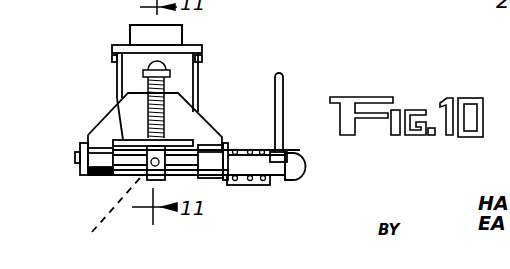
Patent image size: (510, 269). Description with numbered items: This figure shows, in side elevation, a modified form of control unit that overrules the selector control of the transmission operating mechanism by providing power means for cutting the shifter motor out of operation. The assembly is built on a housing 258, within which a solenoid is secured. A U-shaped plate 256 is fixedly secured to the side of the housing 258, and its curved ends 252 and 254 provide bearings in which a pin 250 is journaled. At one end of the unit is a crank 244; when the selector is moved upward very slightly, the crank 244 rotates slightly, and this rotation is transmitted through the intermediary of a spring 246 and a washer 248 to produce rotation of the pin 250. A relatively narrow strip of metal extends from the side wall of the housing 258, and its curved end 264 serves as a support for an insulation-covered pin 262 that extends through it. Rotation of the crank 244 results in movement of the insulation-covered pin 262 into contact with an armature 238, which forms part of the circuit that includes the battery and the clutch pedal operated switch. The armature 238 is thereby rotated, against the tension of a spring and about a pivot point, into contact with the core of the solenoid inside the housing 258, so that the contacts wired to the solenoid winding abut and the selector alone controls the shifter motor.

The armature 238 is at (122, 140).
The housing 258 is at (200, 43).
The U-shaped plate 256 is at (195, 107).
The curved end 254 is at (100, 176).
The curved end 264 is at (152, 180).
The insulation-covered pin 262 is at (91, 214).
The curved end 252 is at (217, 180).
The pin 250 is at (260, 165).
The crank 244 is at (282, 90).
The washer 248 is at (235, 150).
The spring 246 is at (250, 150).